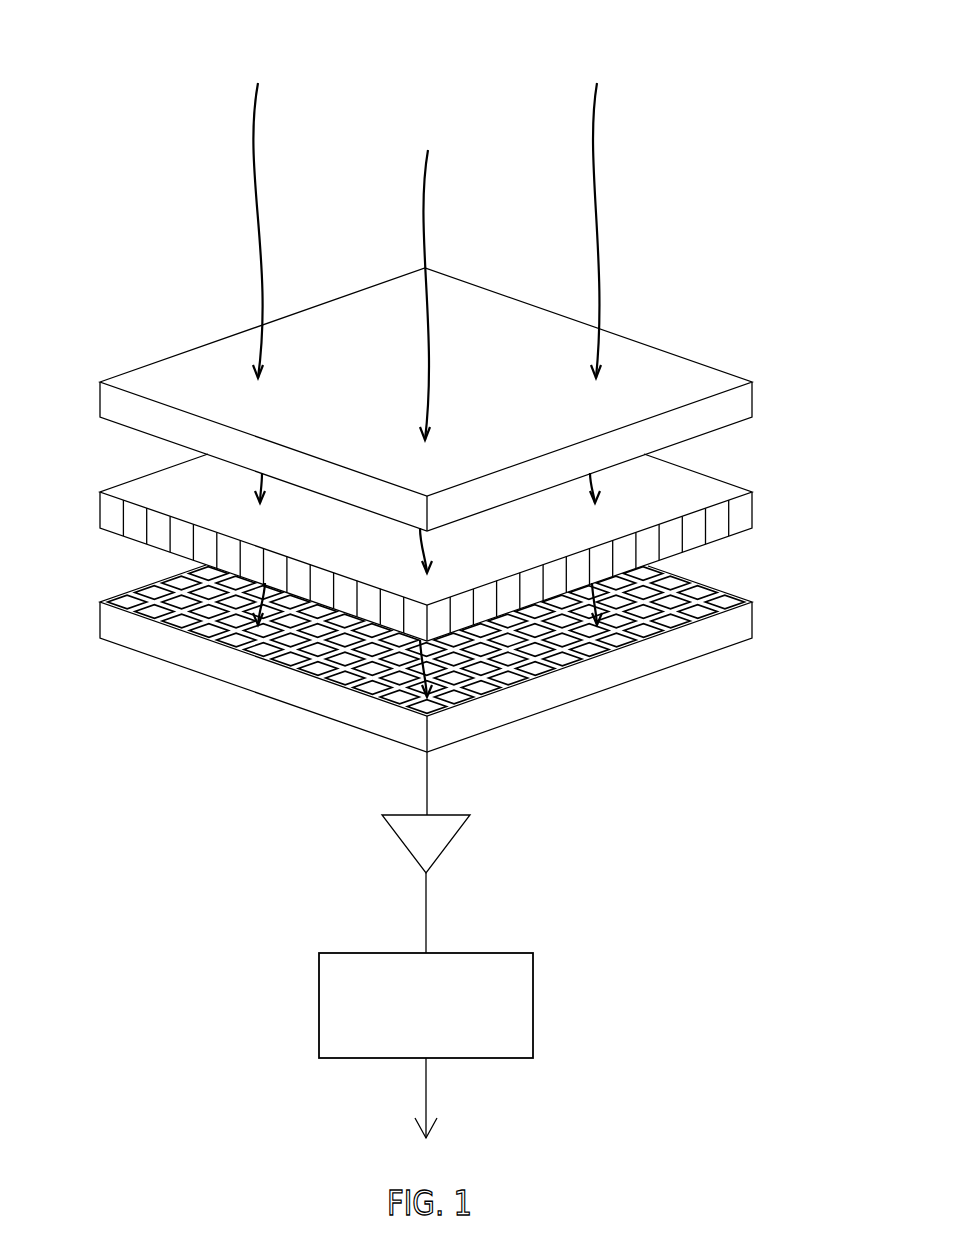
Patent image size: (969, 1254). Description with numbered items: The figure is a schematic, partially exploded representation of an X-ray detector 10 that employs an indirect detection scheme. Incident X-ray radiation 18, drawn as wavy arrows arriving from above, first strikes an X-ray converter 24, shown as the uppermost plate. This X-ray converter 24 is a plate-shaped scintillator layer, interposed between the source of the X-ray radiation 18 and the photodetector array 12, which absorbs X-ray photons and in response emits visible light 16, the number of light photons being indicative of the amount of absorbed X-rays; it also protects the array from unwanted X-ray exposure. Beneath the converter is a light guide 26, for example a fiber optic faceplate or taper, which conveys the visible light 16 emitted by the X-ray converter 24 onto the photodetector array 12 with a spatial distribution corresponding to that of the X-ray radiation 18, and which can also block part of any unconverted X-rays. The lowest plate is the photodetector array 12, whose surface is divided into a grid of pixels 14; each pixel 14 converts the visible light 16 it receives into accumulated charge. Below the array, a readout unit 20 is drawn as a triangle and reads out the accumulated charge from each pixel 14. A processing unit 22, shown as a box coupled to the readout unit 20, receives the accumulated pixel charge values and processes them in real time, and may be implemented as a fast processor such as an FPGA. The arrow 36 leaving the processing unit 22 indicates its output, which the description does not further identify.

The X-ray detector 10 is at (758, 88).
The photodetector array 12 is at (430, 630).
The pixel 14 is at (690, 614).
The visible light 16 is at (430, 545).
The incident X-ray radiation 18 is at (598, 178).
The readout unit 20 is at (428, 840).
The processing unit 22 is at (510, 1007).
The X-ray converter 24 is at (740, 402).
The light guide 26 is at (753, 507).
The output signal 36 is at (426, 1095).